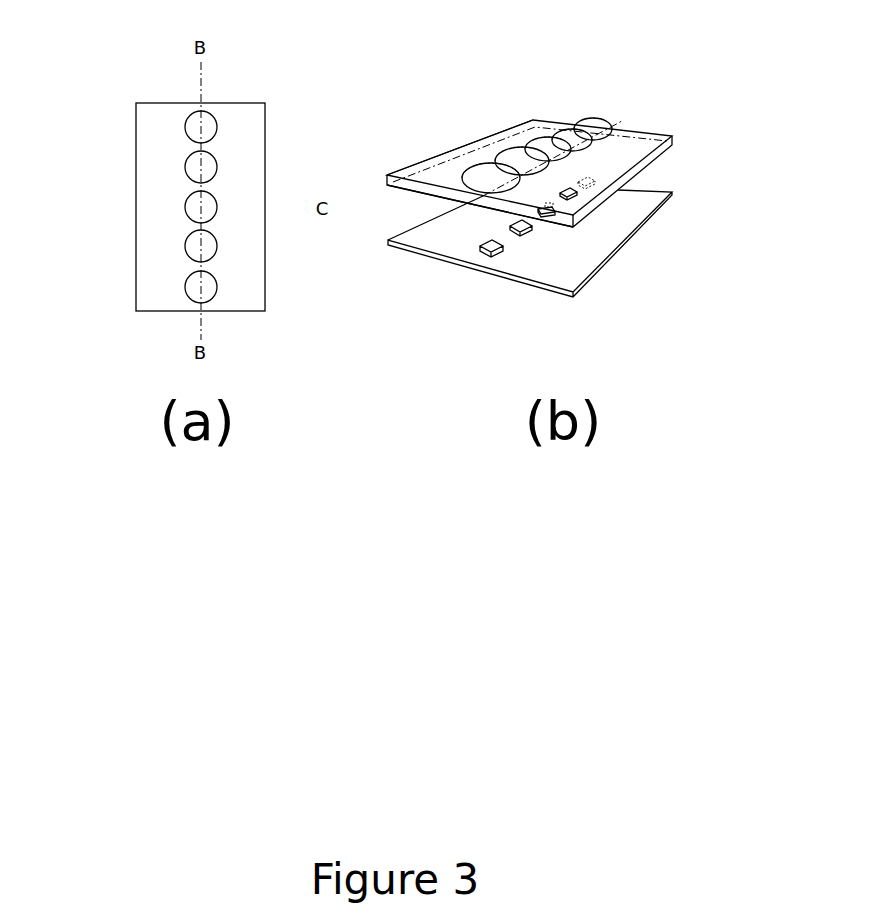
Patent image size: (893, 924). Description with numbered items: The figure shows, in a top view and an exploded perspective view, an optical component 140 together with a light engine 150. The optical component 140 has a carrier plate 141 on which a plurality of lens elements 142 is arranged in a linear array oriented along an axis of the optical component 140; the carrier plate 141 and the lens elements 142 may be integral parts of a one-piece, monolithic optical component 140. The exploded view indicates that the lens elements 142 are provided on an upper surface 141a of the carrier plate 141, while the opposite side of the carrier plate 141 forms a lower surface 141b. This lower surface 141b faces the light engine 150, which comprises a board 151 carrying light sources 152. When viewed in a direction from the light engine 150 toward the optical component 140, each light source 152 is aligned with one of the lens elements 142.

The optical component 140 is at (115, 82).
The carrier plate 141 is at (155, 118).
The upper surface 141a is at (399, 172).
The lower surface 141b is at (399, 190).
The lens elements 142 is at (210, 128).
The light engine 150 is at (678, 205).
The board 151 is at (547, 292).
The light sources 152 is at (486, 253).